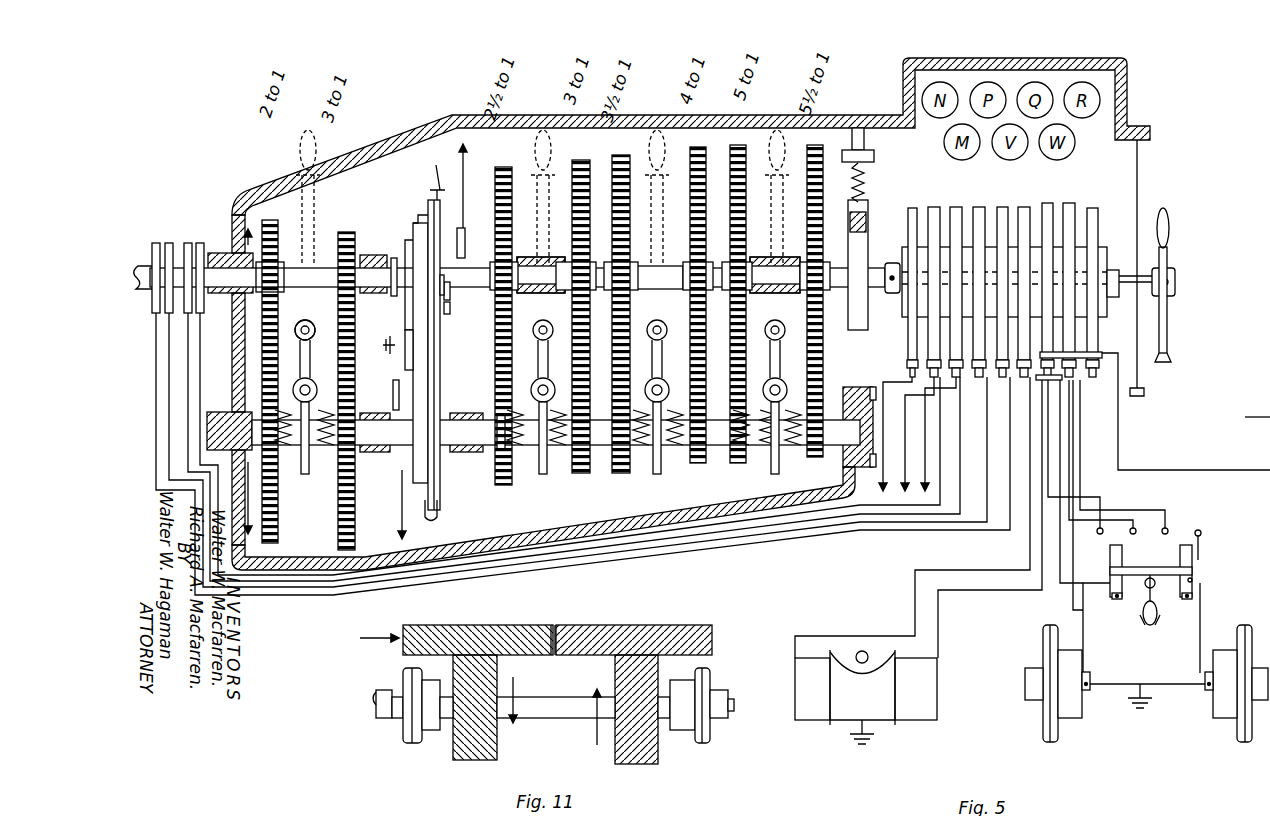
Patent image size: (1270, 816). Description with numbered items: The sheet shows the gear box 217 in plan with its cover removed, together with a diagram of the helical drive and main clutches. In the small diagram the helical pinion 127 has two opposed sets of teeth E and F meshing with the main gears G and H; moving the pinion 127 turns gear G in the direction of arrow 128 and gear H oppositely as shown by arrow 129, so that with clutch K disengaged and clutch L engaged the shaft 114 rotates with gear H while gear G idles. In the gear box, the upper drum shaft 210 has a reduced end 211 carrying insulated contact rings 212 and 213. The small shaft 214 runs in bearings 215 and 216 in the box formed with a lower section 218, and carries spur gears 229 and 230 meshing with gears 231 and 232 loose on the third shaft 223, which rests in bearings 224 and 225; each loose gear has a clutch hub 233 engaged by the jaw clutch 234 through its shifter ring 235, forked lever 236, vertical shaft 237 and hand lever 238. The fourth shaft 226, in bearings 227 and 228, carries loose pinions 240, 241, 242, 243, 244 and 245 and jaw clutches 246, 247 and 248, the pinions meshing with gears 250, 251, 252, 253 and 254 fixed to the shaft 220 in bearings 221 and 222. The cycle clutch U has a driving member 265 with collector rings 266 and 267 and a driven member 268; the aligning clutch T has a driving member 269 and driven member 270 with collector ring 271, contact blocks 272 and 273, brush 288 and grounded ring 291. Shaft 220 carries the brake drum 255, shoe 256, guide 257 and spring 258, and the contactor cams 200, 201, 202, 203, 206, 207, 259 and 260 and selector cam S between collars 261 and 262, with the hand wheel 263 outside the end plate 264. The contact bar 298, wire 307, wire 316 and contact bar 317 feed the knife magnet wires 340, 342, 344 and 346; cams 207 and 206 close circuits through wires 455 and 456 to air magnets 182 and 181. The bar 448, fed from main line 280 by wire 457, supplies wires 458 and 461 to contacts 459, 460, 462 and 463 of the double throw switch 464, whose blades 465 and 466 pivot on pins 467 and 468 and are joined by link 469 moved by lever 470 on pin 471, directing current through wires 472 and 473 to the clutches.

In FIG. 5, the upper drum shaft 210 is at (150, 262).
In FIG. 5, the reduced end 211 is at (160, 262).
In FIG. 5, the insulated contact ring 212 is at (169, 243).
In FIG. 5, the insulated contact ring 213 is at (190, 243).
In FIG. 5, the small shaft 214 is at (325, 267).
In FIG. 5, the bearing 215 is at (222, 252).
In FIG. 5, the bearing 216 is at (373, 255).
In FIG. 5, the gear box 217 is at (442, 123).
In FIG. 5, the lower section 218 is at (543, 518).
In FIG. 5, the shaft 220 is at (680, 265).
In FIG. 5, the bearing 221 is at (560, 256).
In FIG. 5, the bearing 222 is at (795, 256).
In FIG. 5, the third shaft 223 is at (393, 395).
In FIG. 5, the bearing 224 is at (218, 446).
In FIG. 5, the bearing 225 is at (377, 453).
In FIG. 5, the fourth shaft 226 is at (468, 453).
In FIG. 5, the bearing 227 is at (498, 416).
In FIG. 5, the bearing 228 is at (848, 386).
In FIG. 5, the spur gear 229 is at (270, 220).
In FIG. 5, the spur gear 230 is at (348, 232).
In FIG. 5, the spur gear 231 is at (278, 528).
In FIG. 5, the gear 232 is at (355, 505).
In FIG. 5, the clutch hub 233 is at (283, 450).
In FIG. 5, the jaw clutch 234 is at (325, 455).
In FIG. 5, the shifter ring 235 is at (305, 478).
In FIG. 5, the forked lever 236 is at (312, 362).
In FIG. 5, the vertical shaft 237 is at (316, 328).
In FIG. 5, the hand lever 238 is at (279, 247).
In FIG. 5, the pinion 240 is at (505, 167).
In FIG. 5, the pinion 241 is at (581, 474).
In FIG. 5, the pinion 242 is at (621, 474).
In FIG. 5, the pinion 243 is at (698, 464).
In FIG. 5, the pinion 244 is at (739, 464).
In FIG. 5, the pinion 245 is at (815, 458).
In FIG. 5, the jaw clutch 246 is at (543, 470).
In FIG. 5, the jaw clutch 247 is at (658, 474).
In FIG. 5, the jaw clutch 248 is at (777, 474).
In FIG. 5, the gear 250 is at (582, 160).
In FIG. 5, the gear 251 is at (622, 155).
In FIG. 5, the gear 252 is at (700, 147).
In FIG. 5, the gear 253 is at (740, 145).
In FIG. 5, the gear 254 is at (818, 145).
In FIG. 5, the brake drum 255 is at (858, 331).
In FIG. 5, the shoe 256 is at (866, 222).
In FIG. 5, the guide 257 is at (866, 185).
In FIG. 5, the spring 258 is at (868, 170).
In FIG. 5, the contactor cam 259 is at (1093, 208).
In FIG. 5, the contactor cam 260 is at (1069, 203).
In FIG. 5, the collar 261 is at (890, 294).
In FIG. 5, the collar 262 is at (1113, 270).
In FIG. 5, the hand wheel 263 is at (1176, 283).
In FIG. 5, the end plate 264 is at (1140, 185).
In FIG. 5, the driving member 265 is at (428, 470).
In FIG. 5, the collector ring 266 is at (413, 348).
In FIG. 5, the collector ring 267 is at (443, 296).
In FIG. 5, the driven member 268 is at (438, 470).
In FIG. 5, the driving member 269 is at (428, 218).
In FIG. 5, the driven member 270 is at (466, 170).
In FIG. 5, the collector ring 271 is at (449, 300).
In FIG. 5, the insulated contact block 272 is at (449, 314).
In FIG. 5, the insulated contact block 273 is at (376, 340).
In FIG. 5, the main current supply line 280 is at (1240, 417).
In FIG. 5, the brush 288 is at (465, 228).
In FIG. 5, the collector ring 291 is at (394, 258).
In FIG. 5, the stationary contact bar 298 is at (905, 375).
In FIG. 5, the wire 307 is at (905, 495).
In FIG. 5, the wire 316 is at (925, 500).
In FIG. 5, the contact bar 317 is at (1052, 380).
In FIG. 5, the wire 340 is at (790, 522).
In FIG. 5, the wire 342 is at (715, 535).
In FIG. 5, the wire 344 is at (752, 539).
In FIG. 5, the wire 346 is at (664, 555).
In FIG. 5, the bar 448 is at (1105, 353).
In FIG. 5, the wire 455 is at (1028, 530).
In FIG. 5, the wire 456 is at (1040, 550).
In FIG. 5, the wire 457 is at (1205, 470).
In FIG. 5, the wire 458 is at (1102, 528).
In FIG. 5, the contact 459 is at (1135, 528).
In FIG. 5, the contact 460 is at (1167, 528).
In FIG. 5, the wire 461 is at (1076, 481).
In FIG. 5, the contact 462 is at (1078, 495).
In FIG. 5, the contact 463 is at (1194, 560).
In FIG. 5, the double throw switch 464 is at (1117, 600).
In FIG. 5, the vertical blade 465 is at (1146, 598).
In FIG. 5, the vertical blade 466 is at (1193, 597).
In FIG. 5, the pin 467 is at (1114, 578).
In FIG. 5, the pin 468 is at (1193, 580).
In FIG. 5, the link 469 is at (1200, 533).
In FIG. 5, the switch lever 470 is at (1156, 618).
In FIG. 5, the pin 471 is at (1142, 626).
In FIG. 5, the wire 472 is at (1154, 628).
In FIG. 5, the wire 473 is at (1082, 602).
In FIG. 5, the air magnet 181 is at (937, 684).
In FIG. 5, the air magnet 182 is at (812, 668).
In FIG. 5, the contactor cam 200 is at (1003, 207).
In FIG. 5, the contactor cam 201 is at (979, 207).
In FIG. 5, the contactor cam 202 is at (956, 207).
In FIG. 5, the contactor cam 203 is at (934, 207).
In FIG. 5, the contactor cam 206 is at (1048, 203).
In FIG. 5, the contactor cam 207 is at (1024, 207).
In FIG. 5, the selector cam S is at (913, 208).
In FIG. 5, the aligning clutch T is at (437, 182).
In FIG. 5, the cycle clutch U is at (429, 520).
In FIG. 5, the main magnetic clutch K is at (1043, 660).
In FIG. 11, the main magnetic clutch K is at (442, 692).
In FIG. 5, the main magnetic clutch L is at (1230, 655).
In FIG. 11, the main magnetic clutch L is at (688, 692).
In FIG. 11, the shaft 114 is at (568, 712).
In FIG. 11, the helical pinion 127 is at (553, 625).
In FIG. 11, the arrow 128 is at (517, 723).
In FIG. 11, the arrow 129 is at (585, 708).
In FIG. 11, the shift pinion half E is at (490, 628).
In FIG. 11, the shift pinion half F is at (642, 628).
In FIG. 11, the main gear G is at (453, 743).
In FIG. 11, the main gear H is at (658, 752).